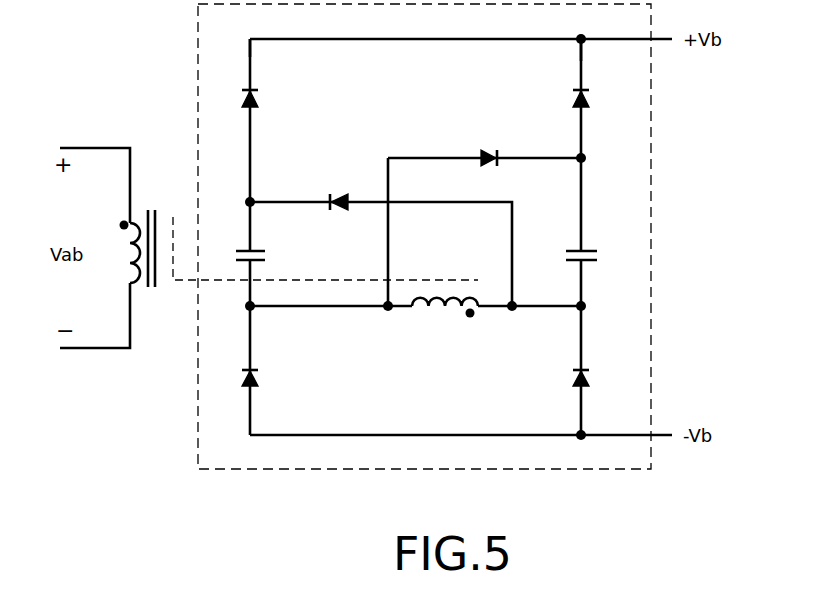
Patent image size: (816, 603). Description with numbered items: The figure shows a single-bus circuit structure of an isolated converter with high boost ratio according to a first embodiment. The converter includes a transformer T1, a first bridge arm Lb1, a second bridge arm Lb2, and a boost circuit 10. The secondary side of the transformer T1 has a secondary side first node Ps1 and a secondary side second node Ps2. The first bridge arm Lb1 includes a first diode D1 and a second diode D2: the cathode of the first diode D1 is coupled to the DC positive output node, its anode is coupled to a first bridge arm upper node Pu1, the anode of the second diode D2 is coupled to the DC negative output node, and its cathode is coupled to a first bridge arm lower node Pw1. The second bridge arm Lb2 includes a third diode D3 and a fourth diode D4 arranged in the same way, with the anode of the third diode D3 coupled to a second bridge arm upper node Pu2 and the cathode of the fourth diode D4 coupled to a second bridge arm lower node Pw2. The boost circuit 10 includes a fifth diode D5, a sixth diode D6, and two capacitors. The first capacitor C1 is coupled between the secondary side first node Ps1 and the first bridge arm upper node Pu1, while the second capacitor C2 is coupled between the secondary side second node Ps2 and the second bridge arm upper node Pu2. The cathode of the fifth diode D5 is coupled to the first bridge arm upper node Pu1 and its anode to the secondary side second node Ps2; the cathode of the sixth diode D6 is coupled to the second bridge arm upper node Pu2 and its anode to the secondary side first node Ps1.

The boost circuit 10 is at (374, 141).
The first bridge arm Lb1 is at (250, 57).
The second bridge arm Lb2 is at (581, 61).
The first bridge arm upper node Pu1 is at (250, 200).
The second bridge arm upper node Pu2 is at (581, 158).
The first bridge arm lower node Pw1 is at (250, 306).
The second bridge arm lower node Pw2 is at (581, 306).
The secondary side first node Ps1 is at (388, 306).
The secondary side second node Ps2 is at (512, 306).
The first diode D1 is at (232, 93).
The second diode D2 is at (232, 372).
The third diode D3 is at (596, 93).
The fourth diode D4 is at (596, 373).
The fifth diode D5 is at (336, 187).
The sixth diode D6 is at (490, 144).
The first capacitor C1 is at (235, 243).
The second capacitor C2 is at (593, 243).
The transformer T1 is at (269, 248).